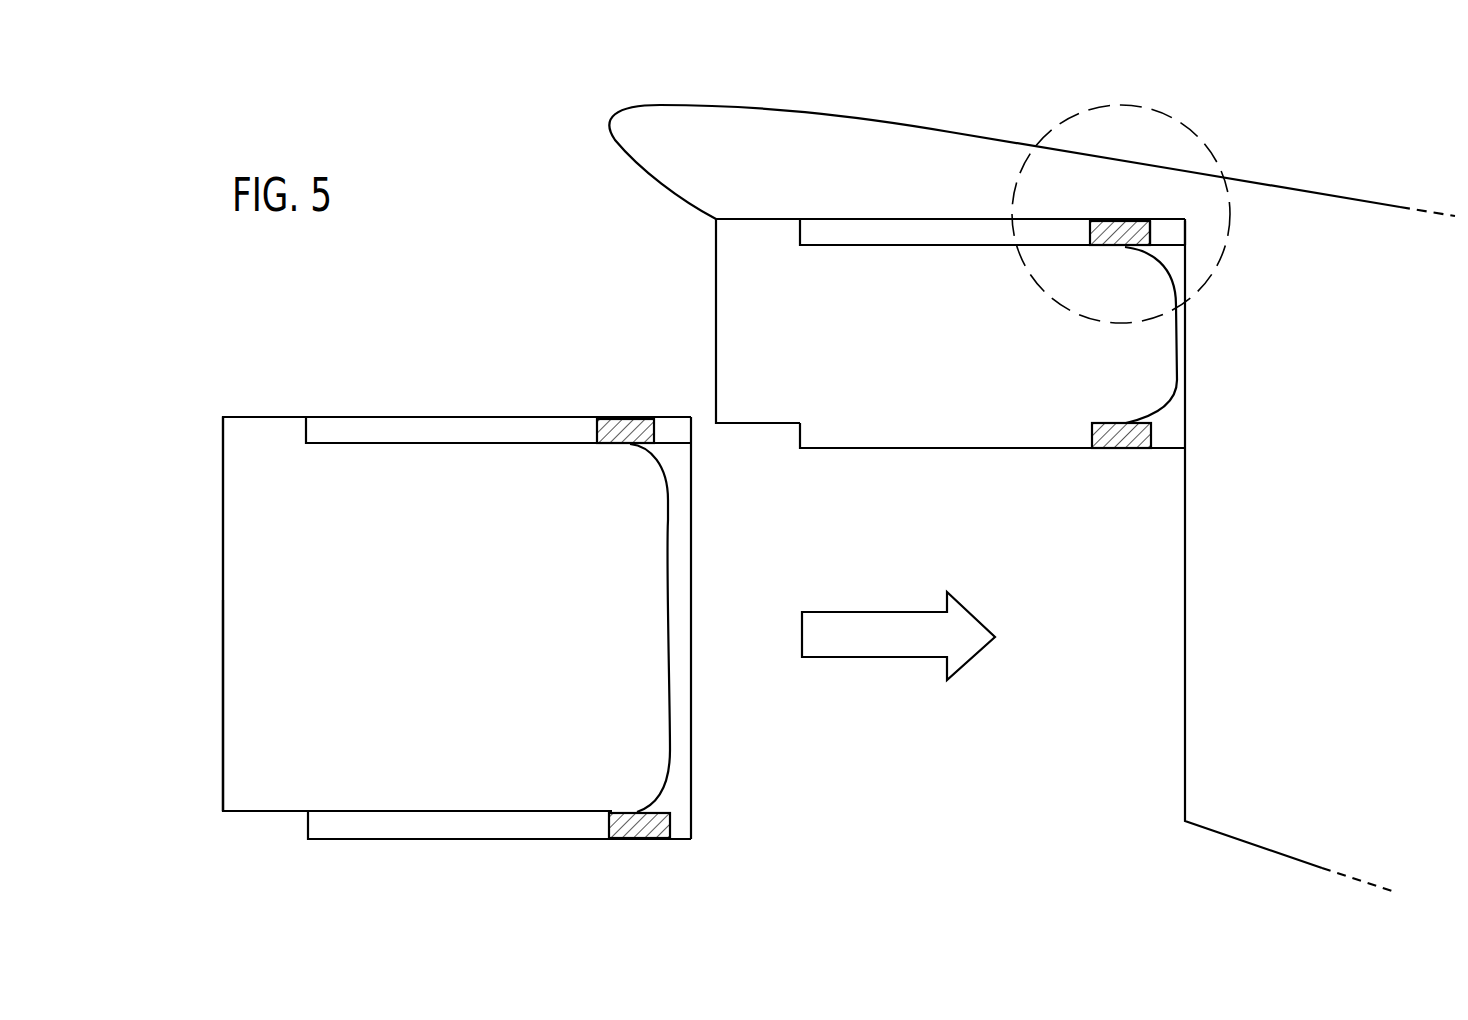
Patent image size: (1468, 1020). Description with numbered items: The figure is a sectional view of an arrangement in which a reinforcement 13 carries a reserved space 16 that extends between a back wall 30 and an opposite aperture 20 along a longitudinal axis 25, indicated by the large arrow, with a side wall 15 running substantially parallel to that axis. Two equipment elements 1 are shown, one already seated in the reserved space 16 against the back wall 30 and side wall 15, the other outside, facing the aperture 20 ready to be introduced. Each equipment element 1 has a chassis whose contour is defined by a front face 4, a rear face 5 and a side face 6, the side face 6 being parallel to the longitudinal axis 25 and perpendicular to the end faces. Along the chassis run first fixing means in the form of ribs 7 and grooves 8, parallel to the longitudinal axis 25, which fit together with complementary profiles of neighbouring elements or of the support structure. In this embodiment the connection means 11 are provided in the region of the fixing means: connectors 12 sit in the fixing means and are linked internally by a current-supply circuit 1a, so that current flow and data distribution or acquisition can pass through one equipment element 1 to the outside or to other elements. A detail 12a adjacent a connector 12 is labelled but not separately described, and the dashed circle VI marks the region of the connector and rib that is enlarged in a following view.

The equipment element 1 is at (360, 649).
The current-supply circuit 1a is at (666, 648).
The front face 4 is at (224, 726).
The rear face 5 is at (693, 621).
The side face 6 is at (258, 553).
The rib 7 is at (536, 838).
The groove 8 is at (417, 433).
The connection means 11 is at (1137, 455).
The connector 12 is at (608, 445).
The seal end section 12a is at (1180, 237).
The reinforcement 13 is at (762, 172).
The side wall 15 is at (897, 219).
The reserved space 16 is at (970, 799).
The aperture 20 is at (693, 390).
The longitudinal axis 25 is at (893, 637).
The back wall 30 is at (1185, 677).
The detail VI is at (1212, 142).